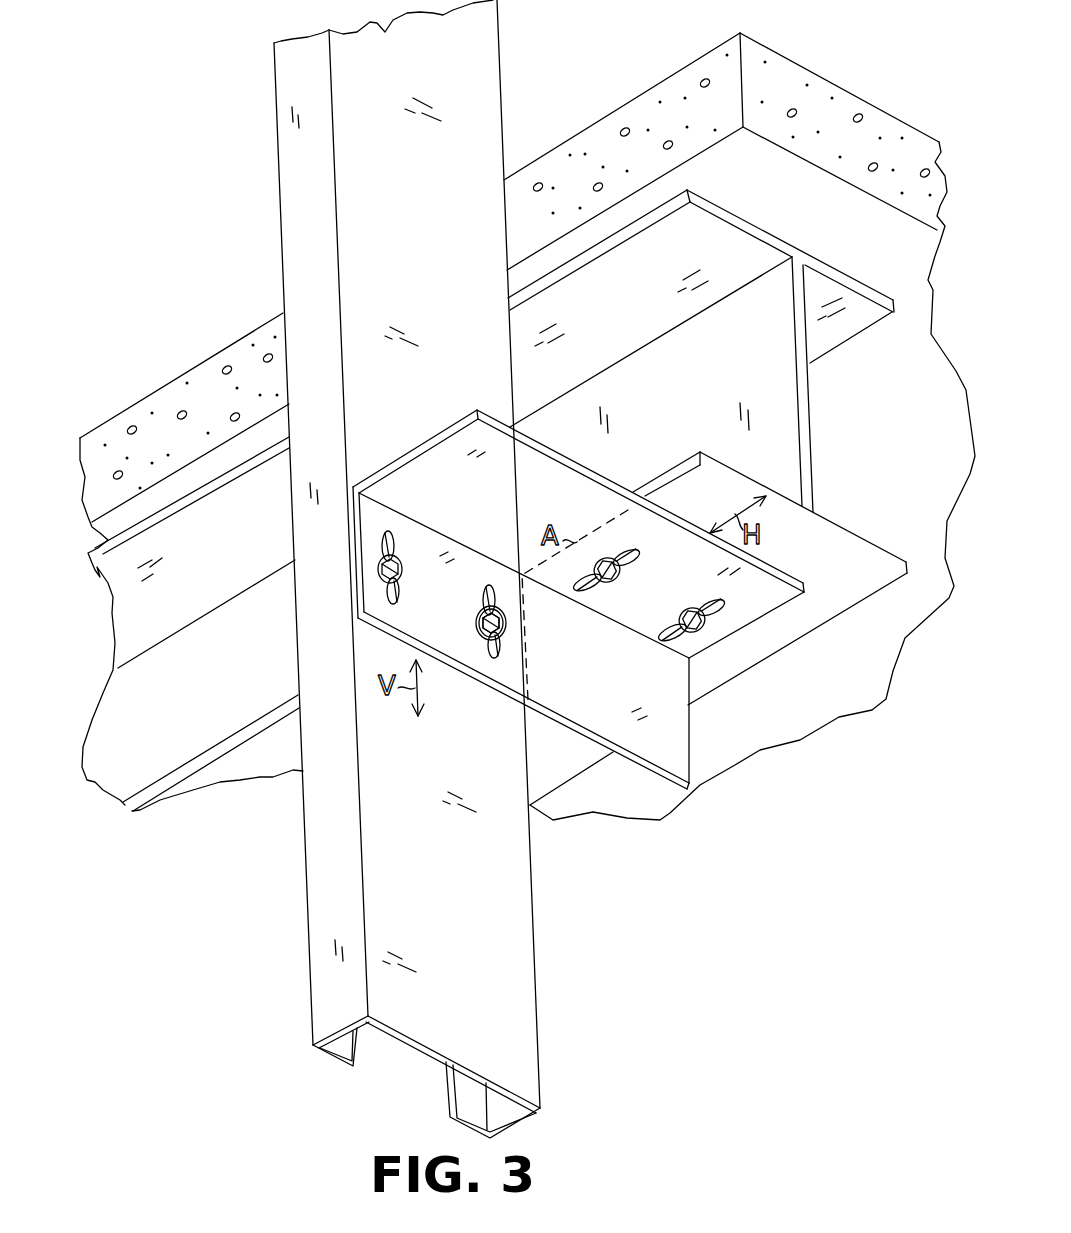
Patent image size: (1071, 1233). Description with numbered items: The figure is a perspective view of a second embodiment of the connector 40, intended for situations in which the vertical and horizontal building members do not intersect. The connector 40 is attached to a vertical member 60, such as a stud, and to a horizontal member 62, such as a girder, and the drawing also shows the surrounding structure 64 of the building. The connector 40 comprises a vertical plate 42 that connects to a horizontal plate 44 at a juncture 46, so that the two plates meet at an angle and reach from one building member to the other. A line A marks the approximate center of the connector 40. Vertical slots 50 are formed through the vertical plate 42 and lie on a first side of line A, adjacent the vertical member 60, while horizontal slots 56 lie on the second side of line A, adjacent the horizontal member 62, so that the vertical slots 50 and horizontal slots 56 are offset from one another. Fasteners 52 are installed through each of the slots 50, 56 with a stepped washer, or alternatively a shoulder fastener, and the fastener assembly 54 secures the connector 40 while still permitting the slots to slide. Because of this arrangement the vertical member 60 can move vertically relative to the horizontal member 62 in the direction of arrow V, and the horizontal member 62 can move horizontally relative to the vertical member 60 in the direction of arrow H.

The connector 40 is at (578, 599).
The vertical plate 42 is at (621, 695).
The horizontal plate 44 is at (549, 505).
The juncture 46 is at (424, 524).
The vertical slots 50 is at (497, 652).
The fasteners 52 is at (498, 630).
The wing nut 54 is at (479, 617).
The horizontal slots 56 is at (638, 564).
The vertical member 60 is at (532, 905).
The horizontal member 62 is at (837, 603).
The concrete slab 64 is at (793, 76).